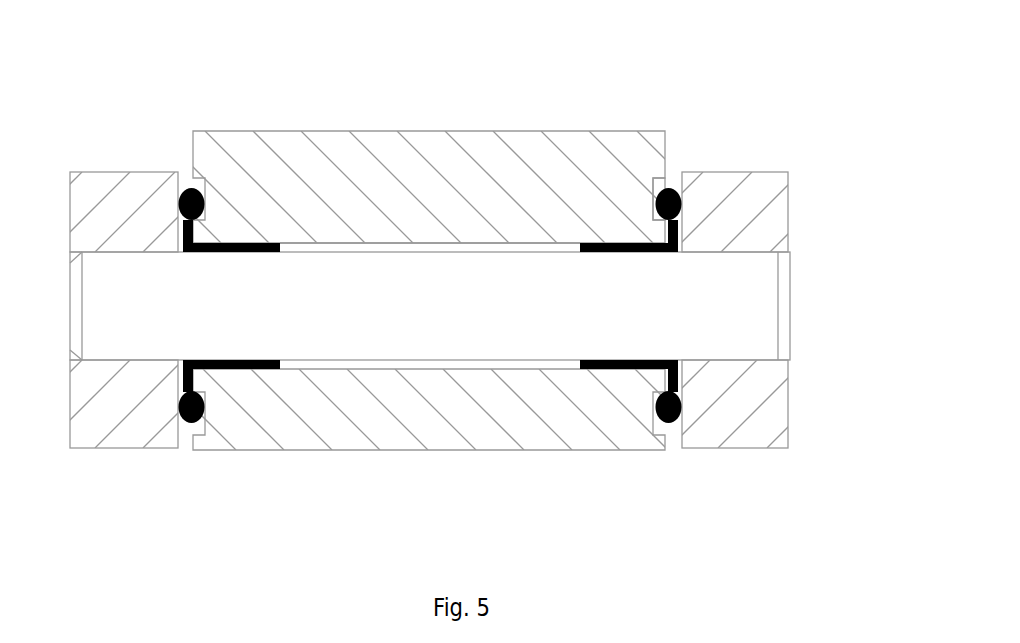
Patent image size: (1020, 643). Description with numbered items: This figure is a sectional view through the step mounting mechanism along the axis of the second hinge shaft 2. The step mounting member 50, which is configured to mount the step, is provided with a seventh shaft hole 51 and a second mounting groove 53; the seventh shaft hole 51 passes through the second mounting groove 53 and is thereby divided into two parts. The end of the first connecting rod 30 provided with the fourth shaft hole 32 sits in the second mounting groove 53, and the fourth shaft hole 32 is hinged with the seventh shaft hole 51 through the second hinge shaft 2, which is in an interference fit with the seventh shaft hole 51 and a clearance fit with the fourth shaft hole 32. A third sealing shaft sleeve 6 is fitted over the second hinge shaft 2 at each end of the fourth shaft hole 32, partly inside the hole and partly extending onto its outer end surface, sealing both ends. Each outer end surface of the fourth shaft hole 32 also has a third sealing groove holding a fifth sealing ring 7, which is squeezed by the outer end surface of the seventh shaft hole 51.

The second hinge shaft 2 is at (768, 305).
The third sealing shaft sleeve 6 is at (235, 370).
The fifth sealing ring 7 is at (188, 425).
The first connecting rod 30 is at (538, 140).
The fourth shaft hole 32 is at (390, 248).
The step mounting member 50 is at (141, 195).
The seventh shaft hole 51 is at (730, 252).
The second mounting groove 53 is at (672, 172).